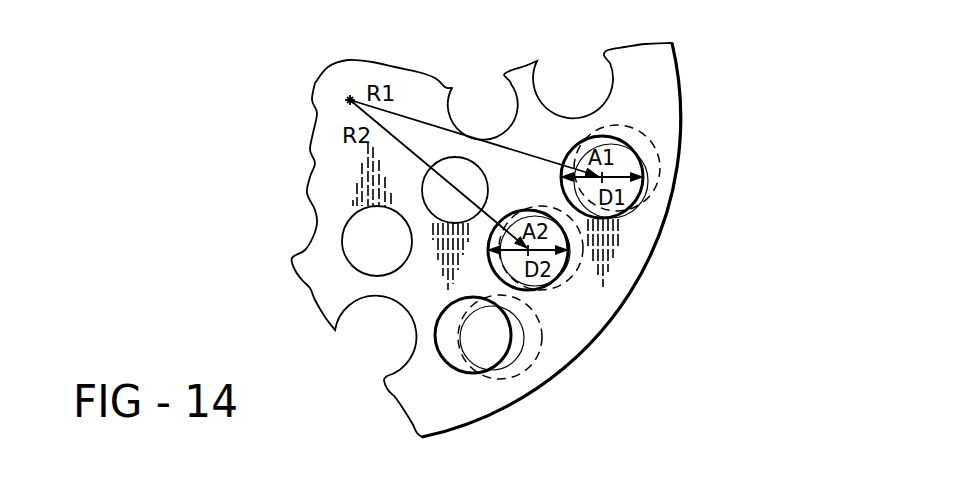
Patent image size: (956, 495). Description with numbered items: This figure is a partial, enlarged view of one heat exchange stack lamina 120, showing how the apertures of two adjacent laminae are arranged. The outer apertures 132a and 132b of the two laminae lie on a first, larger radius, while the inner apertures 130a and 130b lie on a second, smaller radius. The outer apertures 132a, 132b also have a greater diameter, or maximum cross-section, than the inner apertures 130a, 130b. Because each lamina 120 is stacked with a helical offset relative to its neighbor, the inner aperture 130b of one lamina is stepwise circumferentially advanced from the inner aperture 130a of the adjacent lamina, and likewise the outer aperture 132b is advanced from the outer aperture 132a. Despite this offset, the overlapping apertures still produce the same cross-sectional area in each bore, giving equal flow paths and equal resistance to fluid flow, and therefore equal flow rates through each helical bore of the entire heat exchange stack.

The lamina 120 is at (674, 209).
The inner aperture 130a is at (544, 286).
The inner aperture 130b is at (575, 280).
The outer aperture 132a is at (620, 217).
The outer aperture 132b is at (660, 163).